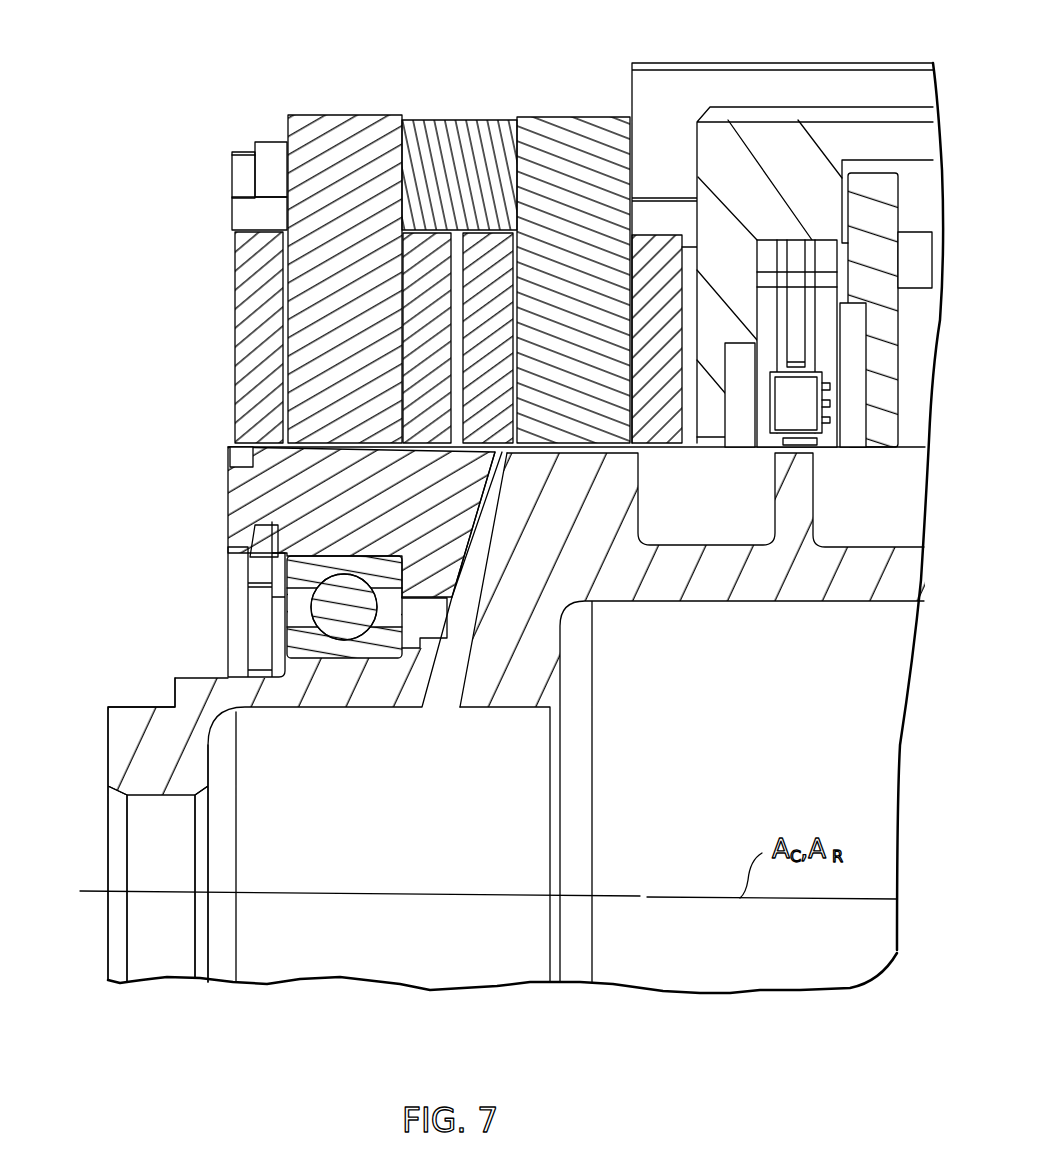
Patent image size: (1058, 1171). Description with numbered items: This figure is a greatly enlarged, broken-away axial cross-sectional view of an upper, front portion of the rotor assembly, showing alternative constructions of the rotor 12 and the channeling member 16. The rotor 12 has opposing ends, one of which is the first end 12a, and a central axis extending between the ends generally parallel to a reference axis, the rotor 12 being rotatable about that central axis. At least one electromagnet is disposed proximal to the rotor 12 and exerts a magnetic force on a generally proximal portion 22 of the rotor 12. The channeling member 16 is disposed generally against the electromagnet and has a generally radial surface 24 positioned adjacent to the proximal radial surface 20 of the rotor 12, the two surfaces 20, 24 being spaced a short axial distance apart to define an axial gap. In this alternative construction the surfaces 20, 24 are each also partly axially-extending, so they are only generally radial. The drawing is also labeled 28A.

The rotor 12 is at (480, 522).
The first end 12a is at (137, 710).
The channeling member 16 is at (448, 97).
The radial surface 20 is at (486, 512).
The proximal portion 22 is at (616, 481).
The radial surface 24 is at (470, 553).
The end plate assembly 28A is at (271, 58).